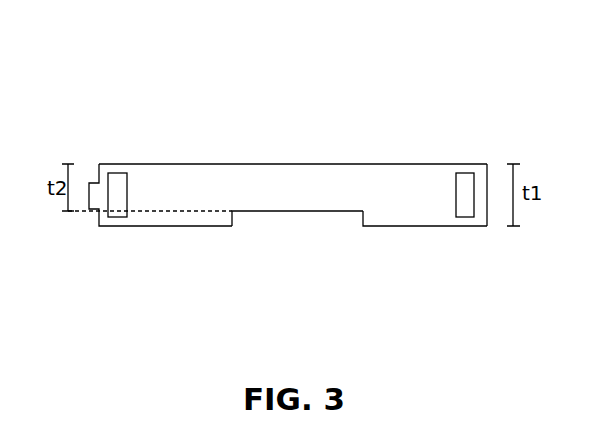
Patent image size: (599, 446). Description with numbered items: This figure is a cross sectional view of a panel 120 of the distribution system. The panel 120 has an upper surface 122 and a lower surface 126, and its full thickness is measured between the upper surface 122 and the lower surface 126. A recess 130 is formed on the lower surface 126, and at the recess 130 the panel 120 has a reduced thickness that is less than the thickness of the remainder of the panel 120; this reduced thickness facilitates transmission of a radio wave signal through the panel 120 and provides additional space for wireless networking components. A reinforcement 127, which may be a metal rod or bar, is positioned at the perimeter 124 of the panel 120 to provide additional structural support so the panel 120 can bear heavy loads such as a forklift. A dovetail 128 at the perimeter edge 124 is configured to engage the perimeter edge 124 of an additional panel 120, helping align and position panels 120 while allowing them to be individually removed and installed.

The panel 120 is at (300, 170).
The upper surface 122 is at (348, 164).
The perimeter edge 124 is at (487, 190).
The lower surface 126 is at (412, 227).
The reinforcement 127 is at (467, 188).
The dovetail 128 is at (89, 183).
The recess 130 is at (283, 212).